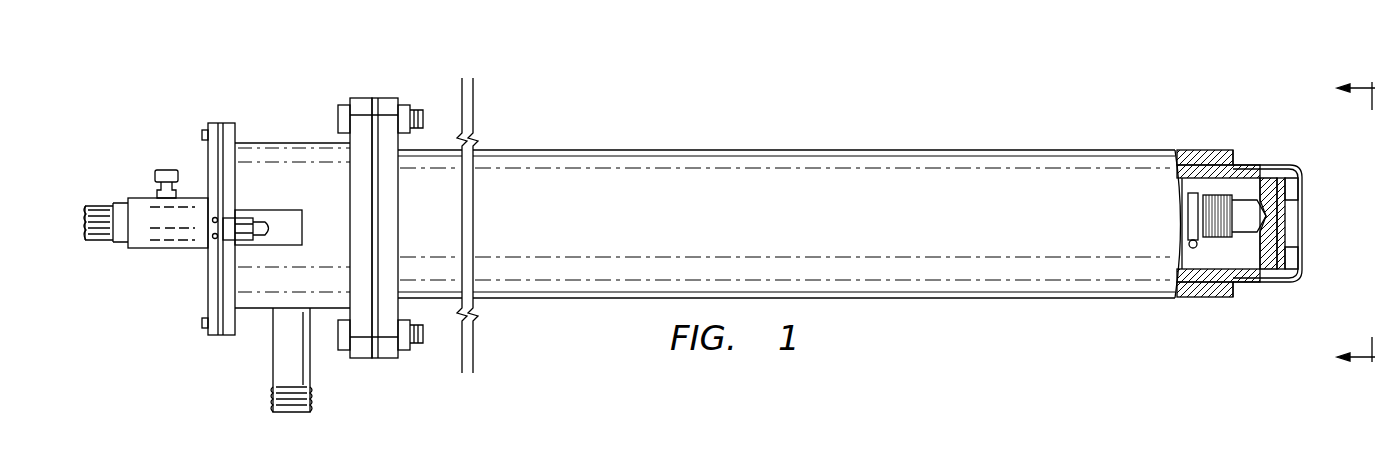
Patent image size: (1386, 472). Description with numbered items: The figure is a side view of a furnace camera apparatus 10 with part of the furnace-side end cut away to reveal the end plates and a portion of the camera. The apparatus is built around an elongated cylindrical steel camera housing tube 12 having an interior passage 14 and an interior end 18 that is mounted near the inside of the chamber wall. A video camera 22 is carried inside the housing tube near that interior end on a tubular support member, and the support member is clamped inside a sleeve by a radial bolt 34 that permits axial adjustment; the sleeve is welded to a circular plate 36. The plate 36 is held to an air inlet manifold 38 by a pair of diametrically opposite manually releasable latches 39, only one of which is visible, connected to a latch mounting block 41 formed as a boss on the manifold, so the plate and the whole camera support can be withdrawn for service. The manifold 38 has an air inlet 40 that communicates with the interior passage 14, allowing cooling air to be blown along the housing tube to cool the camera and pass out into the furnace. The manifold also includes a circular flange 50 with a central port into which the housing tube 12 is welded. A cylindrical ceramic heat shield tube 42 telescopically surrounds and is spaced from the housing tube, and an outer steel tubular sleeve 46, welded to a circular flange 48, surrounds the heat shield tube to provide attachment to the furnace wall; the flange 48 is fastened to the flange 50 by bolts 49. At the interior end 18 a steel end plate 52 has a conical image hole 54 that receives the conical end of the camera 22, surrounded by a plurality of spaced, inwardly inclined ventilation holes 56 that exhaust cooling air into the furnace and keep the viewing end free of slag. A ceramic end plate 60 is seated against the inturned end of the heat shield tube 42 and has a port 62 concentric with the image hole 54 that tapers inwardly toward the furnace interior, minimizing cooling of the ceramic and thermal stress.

The camera apparatus 10 is at (886, 132).
The camera housing tube 12 is at (1193, 165).
The interior passage 14 is at (1190, 257).
The interior end 18 is at (1262, 282).
The video camera 22 is at (1195, 250).
The radial bolt 34 is at (155, 176).
The circular plate 36 is at (208, 155).
The air inlet manifold 38 is at (298, 143).
The manually releasable latch 39 is at (250, 232).
The air inlet 40 is at (292, 415).
The latch mounting block 41 is at (285, 210).
The ceramic heat shield tube 42 is at (1290, 283).
The outer tubular sleeve 46 is at (1003, 298).
The circular flange 48 is at (393, 98).
The bolts 49 is at (345, 355).
The circular flange 50 is at (360, 98).
The steel end plate 52 is at (1242, 238).
The image hole 54 is at (1287, 224).
The ventilation holes 56 is at (1255, 178).
The ceramic end plate 60 is at (1287, 262).
The port 62 is at (1287, 192).